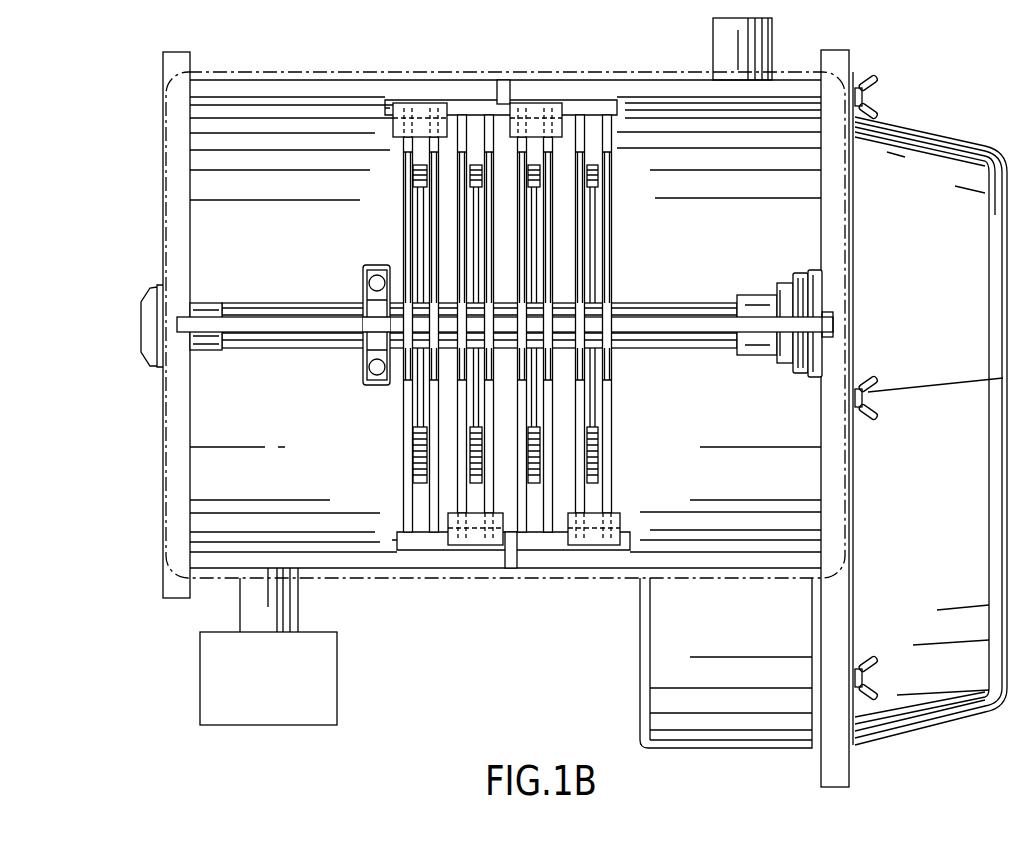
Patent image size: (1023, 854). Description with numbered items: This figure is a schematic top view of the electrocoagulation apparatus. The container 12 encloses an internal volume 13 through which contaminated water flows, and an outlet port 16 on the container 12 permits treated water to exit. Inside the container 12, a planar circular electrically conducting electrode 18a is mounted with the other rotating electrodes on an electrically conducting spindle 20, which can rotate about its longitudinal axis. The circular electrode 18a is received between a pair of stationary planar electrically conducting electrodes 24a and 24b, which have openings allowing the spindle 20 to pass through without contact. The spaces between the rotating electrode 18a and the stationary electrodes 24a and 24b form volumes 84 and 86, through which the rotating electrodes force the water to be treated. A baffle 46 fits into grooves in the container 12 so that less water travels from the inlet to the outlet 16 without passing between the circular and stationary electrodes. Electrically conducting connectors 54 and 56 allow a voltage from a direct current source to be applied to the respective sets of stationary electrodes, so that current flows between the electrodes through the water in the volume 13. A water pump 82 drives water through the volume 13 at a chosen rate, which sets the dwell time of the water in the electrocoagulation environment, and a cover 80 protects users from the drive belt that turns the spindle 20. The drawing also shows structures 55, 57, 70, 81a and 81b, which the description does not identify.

The container 12 is at (306, 86).
The internal volume 13 is at (285, 409).
The outlet port 16 is at (711, 45).
The circular electrode 18a is at (597, 400).
The spindle 20 is at (402, 347).
The stationary electrode 24a is at (612, 425).
The stationary electrode 24b is at (580, 459).
The baffle 46 is at (662, 321).
The electrically conducting connector 54 is at (511, 565).
The lower mounting block 55 is at (478, 525).
The electrically conducting connector 56 is at (500, 90).
The upper mounting block 57 is at (556, 123).
The lower compartment 70 is at (747, 634).
The cover 80 is at (932, 507).
The lower rail 81a is at (398, 544).
The upper rail 81b is at (387, 108).
The water pump 82 is at (285, 688).
The volume 84 is at (584, 484).
The volume 86 is at (602, 484).